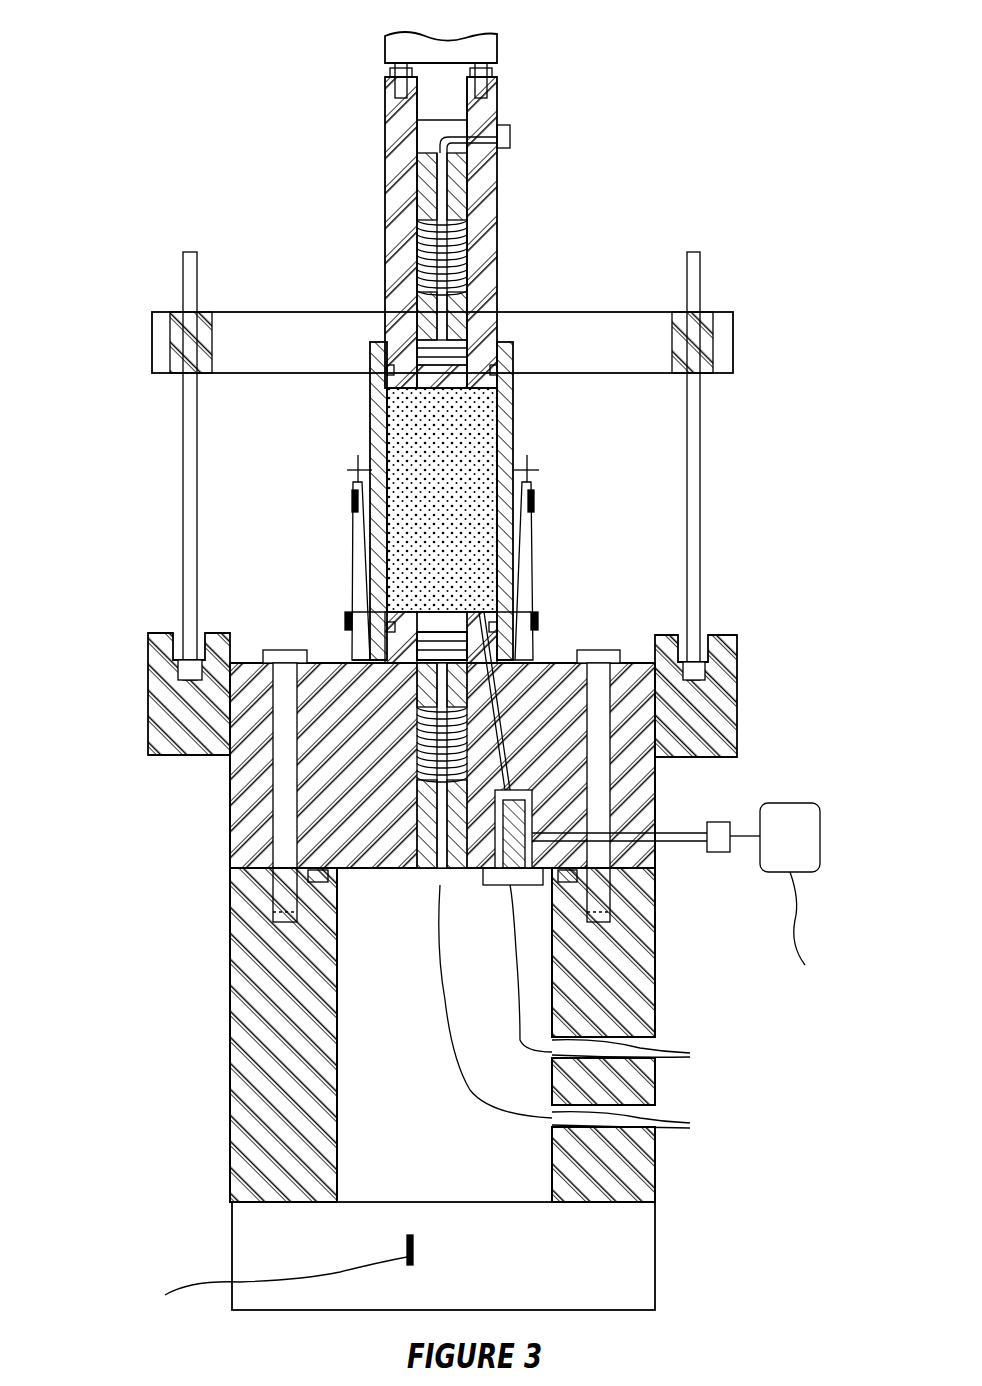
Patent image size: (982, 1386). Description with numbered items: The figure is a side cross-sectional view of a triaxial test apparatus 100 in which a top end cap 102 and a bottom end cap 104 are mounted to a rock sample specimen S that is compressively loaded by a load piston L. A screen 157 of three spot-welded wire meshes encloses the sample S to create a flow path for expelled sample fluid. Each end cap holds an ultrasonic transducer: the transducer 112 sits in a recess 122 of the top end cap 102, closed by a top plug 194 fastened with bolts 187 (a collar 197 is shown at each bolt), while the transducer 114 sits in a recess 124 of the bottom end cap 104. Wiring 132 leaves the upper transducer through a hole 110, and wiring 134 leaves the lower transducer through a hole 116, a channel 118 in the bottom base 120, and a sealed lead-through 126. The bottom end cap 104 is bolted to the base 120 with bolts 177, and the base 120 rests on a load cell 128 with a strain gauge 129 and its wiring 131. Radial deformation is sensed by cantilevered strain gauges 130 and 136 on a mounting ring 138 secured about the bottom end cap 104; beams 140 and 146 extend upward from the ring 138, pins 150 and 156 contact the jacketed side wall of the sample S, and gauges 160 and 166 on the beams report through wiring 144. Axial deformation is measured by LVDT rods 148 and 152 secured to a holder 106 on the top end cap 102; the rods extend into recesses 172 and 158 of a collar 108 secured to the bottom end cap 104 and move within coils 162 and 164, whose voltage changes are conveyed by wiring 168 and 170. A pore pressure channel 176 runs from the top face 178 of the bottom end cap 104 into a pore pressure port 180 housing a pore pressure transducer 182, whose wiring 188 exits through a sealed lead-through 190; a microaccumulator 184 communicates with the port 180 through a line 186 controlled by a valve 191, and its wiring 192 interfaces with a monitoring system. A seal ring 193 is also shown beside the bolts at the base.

The load piston L is at (445, 45).
The top plug 194 is at (393, 68).
The bolts 187 is at (392, 86).
The pin collars 197 is at (490, 85).
The top end cap 102 is at (410, 238).
The wiring 132 is at (512, 137).
The hole 110 is at (475, 150).
The recess 122 is at (462, 190).
The ultrasonic transducer 112 is at (415, 355).
The test apparatus 100 is at (385, 298).
The holder 106 is at (548, 312).
The LVDT rod 152 is at (183, 410).
The LVDT rod 148 is at (700, 420).
The cantilevered strain gauge 130 is at (533, 545).
The screen 157 is at (497, 343).
The rock sample specimen S is at (490, 433).
The bottom end cap 104 is at (372, 655).
The pin 156 is at (358, 468).
The gauge 166 is at (353, 495).
The beam 146 is at (353, 530).
The ultrasonic transducer 114 is at (355, 570).
The mounting ring 138 is at (372, 600).
The cantilevered strain gauge 136 is at (347, 620).
The pin 150 is at (528, 468).
The gauge 160 is at (534, 500).
The beam 140 is at (535, 520).
The wiring 144 is at (540, 578).
The top face 178 is at (498, 606).
The recess 158 is at (150, 700).
The coil 164 is at (178, 652).
The wiring 170 is at (165, 633).
The coil 162 is at (737, 650).
The recess 172 is at (737, 690).
The wiring 168 is at (720, 635).
The collar 108 is at (720, 720).
The bolts 177 is at (282, 650).
The recess 124 is at (420, 835).
The pore pressure channel 176 is at (537, 677).
The pore pressure transducer 182 is at (513, 885).
The line 186 is at (680, 842).
The valve 191 is at (720, 822).
The microaccumulator 184 is at (787, 803).
The wiring 192 is at (795, 912).
The bottom base 120 is at (230, 1020).
The channel 118 is at (560, 958).
The hole 116 is at (440, 900).
The left seal ring 193 is at (340, 878).
The pore pressure port 180 is at (640, 900).
The wiring 188 is at (516, 950).
The wiring 134 is at (457, 1035).
The sealed lead-through 190 is at (620, 1048).
The sealed lead-through 126 is at (620, 1115).
The load cell 128 is at (255, 1245).
The strain gauge 129 is at (405, 1240).
The wiring 131 is at (185, 1290).